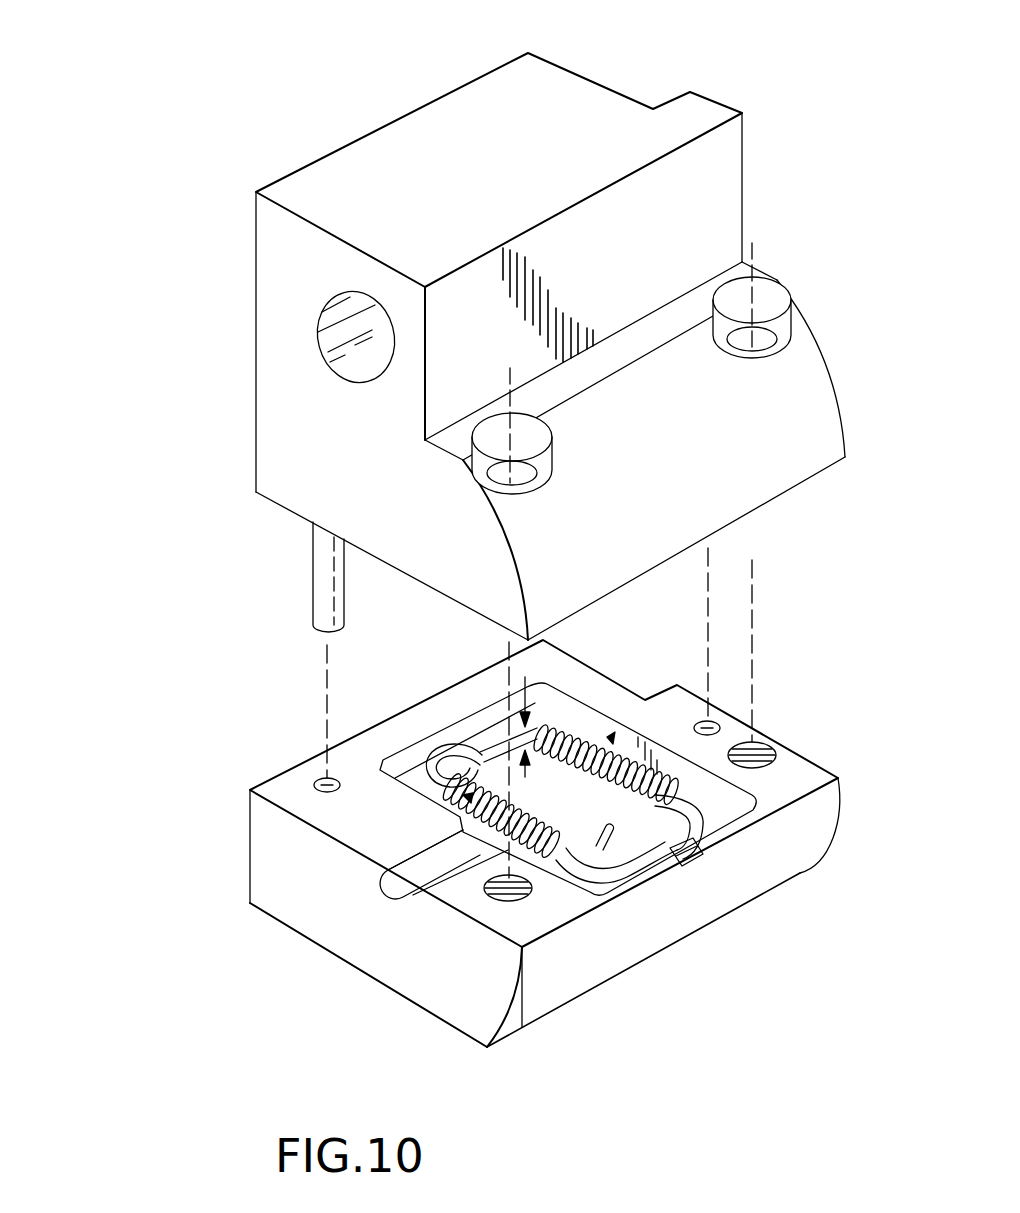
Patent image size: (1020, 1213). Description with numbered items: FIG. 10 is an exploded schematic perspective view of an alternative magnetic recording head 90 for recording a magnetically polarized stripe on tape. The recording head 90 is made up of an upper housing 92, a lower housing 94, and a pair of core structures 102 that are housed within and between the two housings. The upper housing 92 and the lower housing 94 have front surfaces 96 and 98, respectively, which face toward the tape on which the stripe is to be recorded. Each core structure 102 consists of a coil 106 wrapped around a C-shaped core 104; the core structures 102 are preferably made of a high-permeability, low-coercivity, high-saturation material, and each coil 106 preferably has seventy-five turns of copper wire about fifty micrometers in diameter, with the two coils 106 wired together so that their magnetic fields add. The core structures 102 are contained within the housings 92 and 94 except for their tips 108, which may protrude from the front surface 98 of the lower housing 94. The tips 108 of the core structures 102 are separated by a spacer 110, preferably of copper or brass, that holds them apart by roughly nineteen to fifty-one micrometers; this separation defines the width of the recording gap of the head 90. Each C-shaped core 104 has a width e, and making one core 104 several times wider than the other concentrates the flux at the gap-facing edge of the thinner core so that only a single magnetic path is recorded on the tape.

The recording head 90 is at (195, 160).
The upper housing 92 is at (560, 92).
The lower housing 94 is at (798, 775).
The front surface 96 is at (777, 475).
The front surface 98 is at (803, 843).
The core structure 102 is at (607, 735).
The C-shaped core 104 is at (492, 728).
The coil 106 is at (592, 735).
The tip 108 is at (652, 853).
The spacer 110 is at (657, 840).